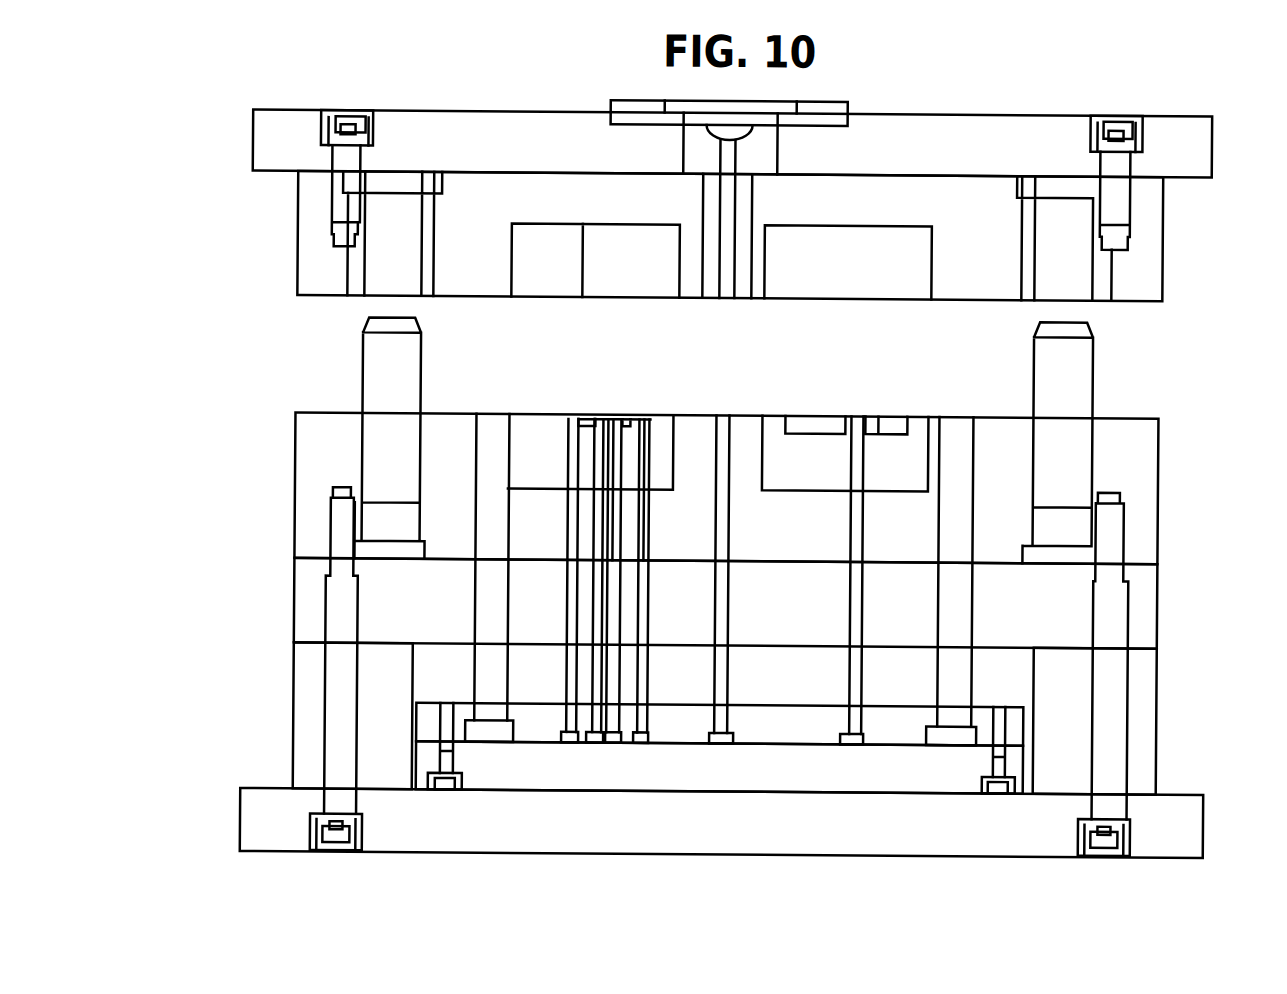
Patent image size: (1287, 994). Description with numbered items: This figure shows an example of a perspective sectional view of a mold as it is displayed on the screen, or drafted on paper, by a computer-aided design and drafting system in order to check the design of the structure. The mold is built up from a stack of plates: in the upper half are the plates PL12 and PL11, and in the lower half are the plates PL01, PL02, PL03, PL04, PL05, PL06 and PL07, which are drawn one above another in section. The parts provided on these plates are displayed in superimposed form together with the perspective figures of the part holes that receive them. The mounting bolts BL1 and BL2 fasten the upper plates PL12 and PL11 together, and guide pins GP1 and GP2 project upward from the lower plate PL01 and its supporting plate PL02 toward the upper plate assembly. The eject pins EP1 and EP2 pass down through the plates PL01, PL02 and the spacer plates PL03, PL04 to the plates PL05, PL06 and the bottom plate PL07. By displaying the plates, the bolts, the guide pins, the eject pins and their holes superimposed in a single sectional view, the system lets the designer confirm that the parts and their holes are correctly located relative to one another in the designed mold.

The plate PL12 is at (268, 127).
The plate PL11 is at (298, 240).
The mounting bolt BL1 is at (338, 113).
The mounting bolt BL2 is at (1125, 113).
The guide pin GP1 is at (370, 360).
The guide pin GP2 is at (1084, 364).
The plate PL01 is at (312, 460).
The plate PL02 is at (308, 585).
The plate PL03 is at (291, 720).
The plate PL04 is at (1145, 669).
The eject pin EP1 is at (338, 668).
The eject pin EP2 is at (1113, 724).
The plate PL05 is at (528, 738).
The plate PL06 is at (638, 783).
The plate PL07 is at (748, 835).